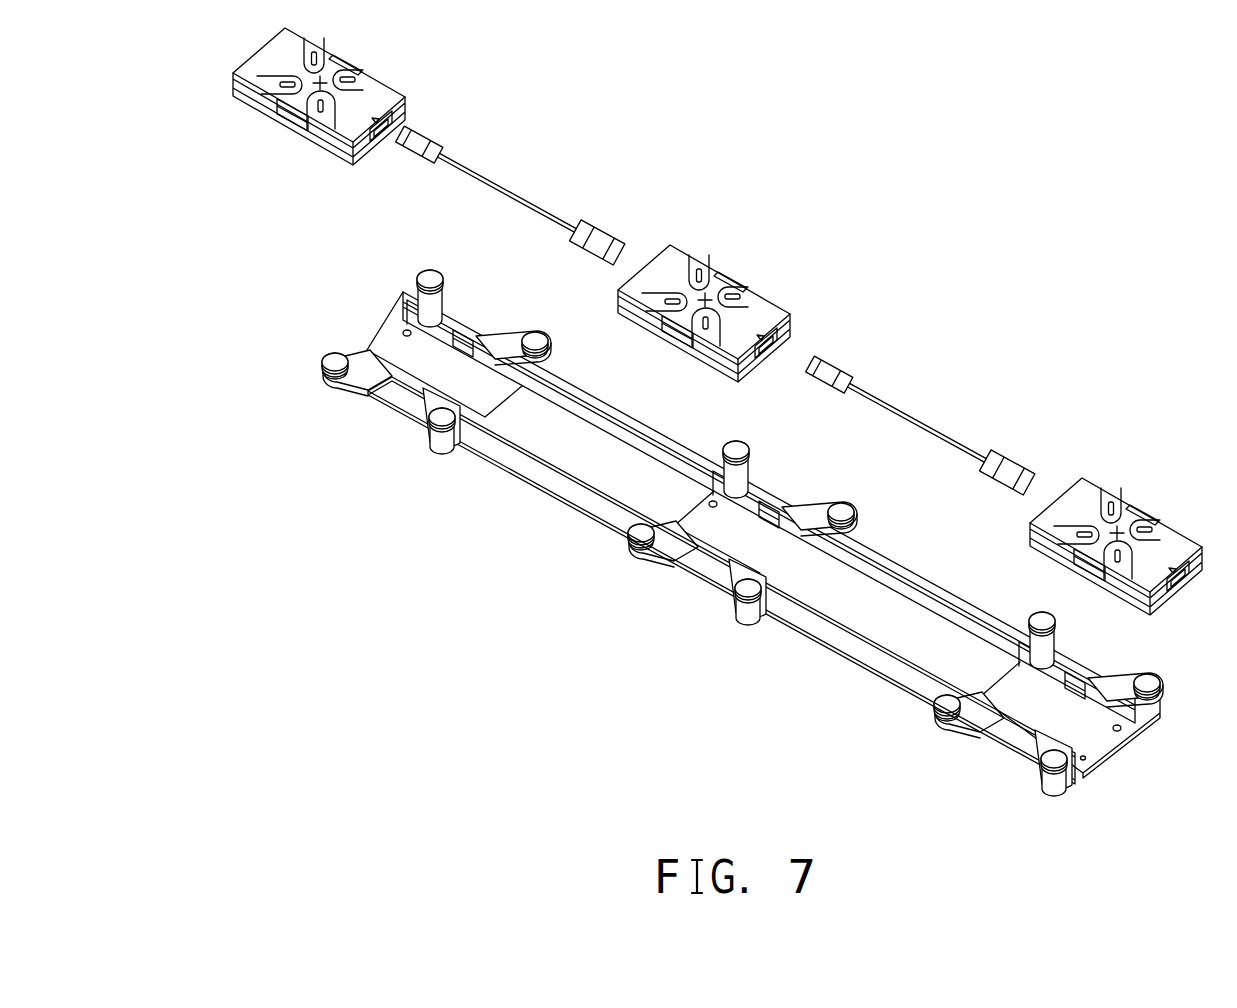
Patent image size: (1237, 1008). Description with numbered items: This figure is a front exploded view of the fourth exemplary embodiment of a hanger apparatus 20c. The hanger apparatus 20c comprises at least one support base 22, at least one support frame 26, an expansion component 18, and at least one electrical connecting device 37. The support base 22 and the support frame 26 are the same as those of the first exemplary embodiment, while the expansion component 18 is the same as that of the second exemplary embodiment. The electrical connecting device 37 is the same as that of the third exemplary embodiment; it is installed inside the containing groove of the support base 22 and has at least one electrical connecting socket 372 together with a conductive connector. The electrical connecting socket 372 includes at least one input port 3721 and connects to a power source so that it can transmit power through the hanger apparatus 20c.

The hanger apparatus 20c is at (702, 85).
The support base 22 is at (372, 322).
The support frame 26 is at (350, 400).
The expansion component 18 is at (563, 512).
The electrical connecting device 37 is at (737, 262).
The electrical connecting socket 372 is at (831, 376).
The input port 3721 is at (833, 335).